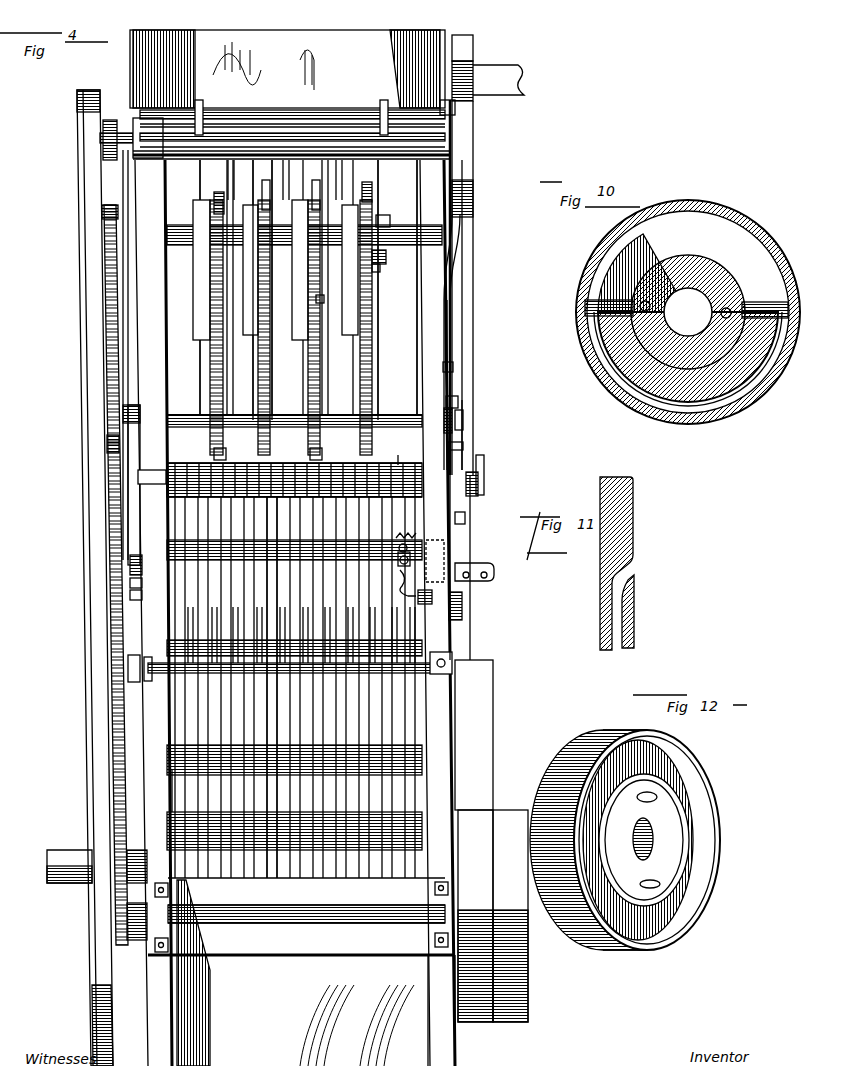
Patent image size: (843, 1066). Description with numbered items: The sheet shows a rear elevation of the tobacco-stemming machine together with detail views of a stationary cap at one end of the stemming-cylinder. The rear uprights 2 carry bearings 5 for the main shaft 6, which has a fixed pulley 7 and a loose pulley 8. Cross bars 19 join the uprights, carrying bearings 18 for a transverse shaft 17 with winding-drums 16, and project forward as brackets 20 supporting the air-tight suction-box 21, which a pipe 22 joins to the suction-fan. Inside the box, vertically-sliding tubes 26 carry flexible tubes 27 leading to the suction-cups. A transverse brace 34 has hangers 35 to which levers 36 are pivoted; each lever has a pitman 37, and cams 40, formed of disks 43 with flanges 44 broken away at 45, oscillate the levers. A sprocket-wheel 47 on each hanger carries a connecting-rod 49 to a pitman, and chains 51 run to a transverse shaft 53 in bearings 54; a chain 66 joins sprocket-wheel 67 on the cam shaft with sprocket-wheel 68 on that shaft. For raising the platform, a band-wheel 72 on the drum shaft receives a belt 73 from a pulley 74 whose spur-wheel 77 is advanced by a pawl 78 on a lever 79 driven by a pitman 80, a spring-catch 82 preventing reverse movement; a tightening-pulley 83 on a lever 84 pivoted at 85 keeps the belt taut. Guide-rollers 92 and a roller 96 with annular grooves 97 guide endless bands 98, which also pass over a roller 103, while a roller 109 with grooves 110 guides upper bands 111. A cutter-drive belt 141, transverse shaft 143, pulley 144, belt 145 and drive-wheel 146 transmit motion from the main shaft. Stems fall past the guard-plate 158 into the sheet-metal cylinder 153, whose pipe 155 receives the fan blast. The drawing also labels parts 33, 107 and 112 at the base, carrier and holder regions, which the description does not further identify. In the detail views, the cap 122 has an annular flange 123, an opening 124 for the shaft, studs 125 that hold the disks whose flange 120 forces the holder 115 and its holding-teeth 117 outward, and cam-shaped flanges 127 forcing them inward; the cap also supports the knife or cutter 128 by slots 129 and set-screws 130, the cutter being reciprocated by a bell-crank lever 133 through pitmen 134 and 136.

In FIG. 4, the rear legs or uprights 2 is at (295, 613).
In FIG. 4, the boxes or bearings 5 is at (434, 886).
In FIG. 4, the main shaft 6 is at (357, 906).
In FIG. 4, the fixed pulley 7 is at (475, 916).
In FIG. 4, the loose pulley 8 is at (510, 916).
In FIG. 4, the winding-drums 16 is at (380, 112).
In FIG. 4, the transverse shaft 17 is at (283, 120).
In FIG. 4, the bearings or boxes 18 is at (455, 106).
In FIG. 4, the cross bars 19 is at (419, 160).
In FIG. 4, the brackets 20 is at (450, 158).
In FIG. 4, the suction-box 21 is at (287, 69).
In FIG. 4, the pipe 22 is at (524, 78).
In FIG. 4, the vertically-sliding tubes or pipes 26 is at (344, 168).
In FIG. 4, the flexible tubes 27 is at (290, 340).
In FIG. 4, the base box 33 is at (301, 973).
In FIG. 4, the transverse brace 34 is at (234, 178).
In FIG. 4, the hangers 35 is at (358, 190).
In FIG. 4, the levers 36 is at (372, 196).
In FIG. 4, the pitman 37 is at (322, 454).
In FIG. 4, the cams 40 is at (241, 270).
In FIG. 4, the disks 43 is at (345, 260).
In FIG. 4, the laterally-extending flanges 44 is at (322, 292).
In FIG. 4, the break in flange 45 is at (372, 280).
In FIG. 4, the sprocket-wheel 47 is at (388, 258).
In FIG. 4, the connecting-rod 49 is at (322, 303).
In FIG. 4, the chains 51 is at (378, 346).
In FIG. 4, the transverse shaft 53 is at (394, 418).
In FIG. 4, the bearings 54 is at (460, 405).
In FIG. 4, the chain 66 is at (105, 340).
In FIG. 4, the sprocket-wheel 67 is at (100, 245).
In FIG. 4, the sprocket-wheel 68 is at (106, 442).
In FIG. 4, the band-wheel or drum 72 is at (462, 44).
In FIG. 4, the belt or band 73 is at (474, 56).
In FIG. 4, the band-wheel or pulley 74 is at (485, 475).
In FIG. 4, the spur-wheel 77 is at (480, 489).
In FIG. 4, the pawl 78 is at (463, 427).
In FIG. 4, the lever 79 is at (498, 435).
In FIG. 4, the pitman 80 is at (446, 418).
In FIG. 4, the spring-catch 82 is at (463, 448).
In FIG. 4, the tightening-pulley 83 is at (462, 272).
In FIG. 4, the lever 84 is at (455, 330).
In FIG. 4, the pivot 85 is at (455, 368).
In FIG. 4, the guide-rollers 92 is at (177, 810).
In FIG. 4, the roller 96 is at (175, 630).
In FIG. 4, the annular grooves 97 is at (195, 630).
In FIG. 4, the endless bands or tapes 98 is at (275, 876).
In FIG. 4, the roller 103 is at (180, 538).
In FIG. 4, the block 107 is at (178, 565).
In FIG. 4, the roller 109 is at (399, 452).
In FIG. 4, the annular grooves 110 is at (412, 482).
In FIG. 4, the endless bands or tapes 111 is at (182, 463).
In FIG. 4, the block 112 is at (432, 600).
In FIG. 4, the holder 115 is at (428, 562).
In FIG. 4, the holding-teeth 117 is at (397, 556).
In FIG. 10, the flange 120 is at (700, 398).
In FIG. 11, the flange 120 is at (636, 624).
In FIG. 4, the cap 122 is at (412, 542).
In FIG. 10, the cap 122 is at (734, 215).
In FIG. 11, the cap 122 is at (600, 590).
In FIG. 12, the cap 122 is at (720, 878).
In FIG. 10, the annular flange 123 is at (752, 396).
In FIG. 12, the annular flange 123 is at (647, 840).
In FIG. 10, the opening 124 is at (688, 312).
In FIG. 12, the opening 124 is at (644, 840).
In FIG. 10, the studs or spurs 125 is at (730, 306).
In FIG. 12, the studs or spurs 125 is at (650, 840).
In FIG. 10, the cam-shaped flanges 127 is at (582, 285).
In FIG. 12, the cam-shaped flanges 127 is at (648, 935).
In FIG. 4, the knife or cutter 128 is at (405, 543).
In FIG. 4, the slots 129 is at (408, 556).
In FIG. 4, the set-screws 130 is at (400, 580).
In FIG. 4, the bell-crank lever 133 is at (462, 603).
In FIG. 4, the pitman 134 is at (490, 562).
In FIG. 4, the pitman 136 is at (545, 520).
In FIG. 4, the belt 141 is at (468, 142).
In FIG. 4, the transverse shaft 143 is at (310, 128).
In FIG. 4, the pulley 144 is at (78, 157).
In FIG. 4, the belt 145 is at (82, 417).
In FIG. 4, the drum or drive-wheel 146 is at (92, 972).
In FIG. 4, the cylinder 153 is at (474, 735).
In FIG. 4, the pipe 155 is at (63, 875).
In FIG. 4, the guard-plate 158 is at (180, 588).